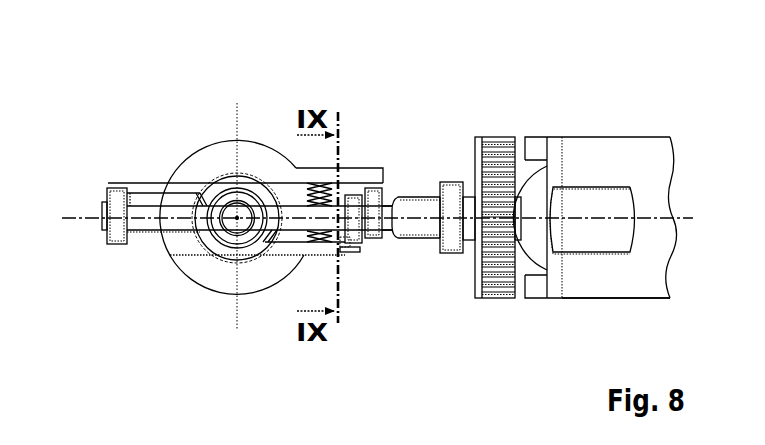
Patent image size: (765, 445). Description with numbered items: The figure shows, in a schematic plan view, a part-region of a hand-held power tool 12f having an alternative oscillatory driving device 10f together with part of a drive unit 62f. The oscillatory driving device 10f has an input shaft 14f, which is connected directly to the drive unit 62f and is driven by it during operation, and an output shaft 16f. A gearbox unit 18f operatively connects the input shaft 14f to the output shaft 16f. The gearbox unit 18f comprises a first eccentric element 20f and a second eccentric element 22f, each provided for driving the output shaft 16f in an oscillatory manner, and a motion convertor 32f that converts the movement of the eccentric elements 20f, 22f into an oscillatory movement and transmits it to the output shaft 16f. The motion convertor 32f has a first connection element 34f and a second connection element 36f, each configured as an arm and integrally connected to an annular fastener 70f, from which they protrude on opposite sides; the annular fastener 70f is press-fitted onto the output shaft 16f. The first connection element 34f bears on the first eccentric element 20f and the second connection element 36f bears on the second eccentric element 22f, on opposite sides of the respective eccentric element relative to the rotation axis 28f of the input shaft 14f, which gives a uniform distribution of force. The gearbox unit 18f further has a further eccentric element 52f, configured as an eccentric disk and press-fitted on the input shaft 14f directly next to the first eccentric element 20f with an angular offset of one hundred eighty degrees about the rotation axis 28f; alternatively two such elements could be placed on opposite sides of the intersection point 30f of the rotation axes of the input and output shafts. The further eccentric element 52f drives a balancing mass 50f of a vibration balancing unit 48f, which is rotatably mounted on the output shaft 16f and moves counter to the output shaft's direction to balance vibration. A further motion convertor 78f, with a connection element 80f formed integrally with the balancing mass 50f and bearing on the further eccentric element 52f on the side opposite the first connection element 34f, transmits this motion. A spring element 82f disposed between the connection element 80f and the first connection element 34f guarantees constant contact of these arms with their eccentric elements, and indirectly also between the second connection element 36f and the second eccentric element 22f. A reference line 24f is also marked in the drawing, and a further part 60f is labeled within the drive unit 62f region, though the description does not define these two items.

The oscillatory driving device 10f is at (391, 73).
The hand-held power tool 12f is at (505, 74).
The input shaft 14f is at (143, 226).
The output shaft 16f is at (230, 235).
The gearbox unit 18f is at (404, 143).
The first eccentric element 20f is at (356, 241).
The second eccentric element 22f is at (117, 237).
The pivot axis 24f is at (233, 118).
The rotation axis 28f is at (63, 209).
The intersection point 30f is at (238, 217).
The motion convertor 32f is at (193, 250).
The first connection element 34f is at (347, 253).
The second connection element 36f is at (143, 187).
The vibration balancing unit 48f is at (184, 136).
The balancing mass 50f is at (212, 150).
The further eccentric element 52f is at (373, 197).
The worm wheel 60f is at (613, 197).
The drive unit 62f is at (598, 288).
The annular fastener 70f is at (238, 238).
The further motion convertor 78f is at (349, 124).
The connection element 80f is at (352, 168).
The spring element 82f is at (322, 241).